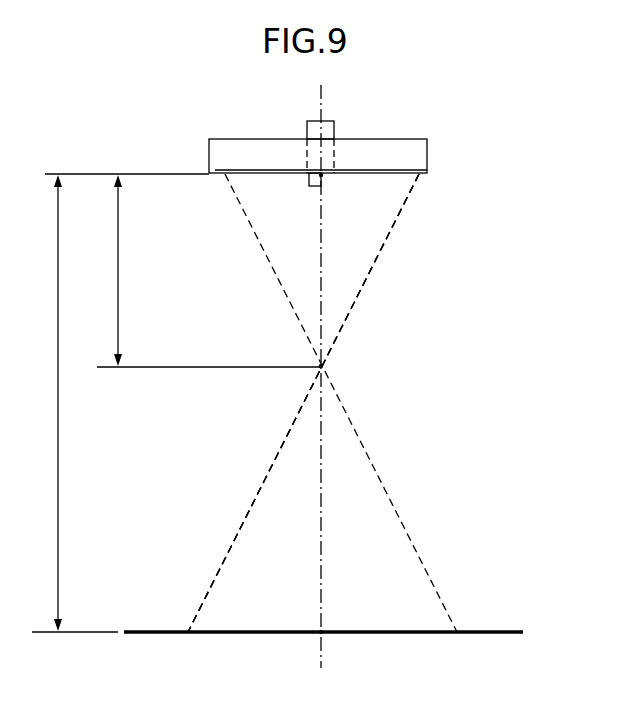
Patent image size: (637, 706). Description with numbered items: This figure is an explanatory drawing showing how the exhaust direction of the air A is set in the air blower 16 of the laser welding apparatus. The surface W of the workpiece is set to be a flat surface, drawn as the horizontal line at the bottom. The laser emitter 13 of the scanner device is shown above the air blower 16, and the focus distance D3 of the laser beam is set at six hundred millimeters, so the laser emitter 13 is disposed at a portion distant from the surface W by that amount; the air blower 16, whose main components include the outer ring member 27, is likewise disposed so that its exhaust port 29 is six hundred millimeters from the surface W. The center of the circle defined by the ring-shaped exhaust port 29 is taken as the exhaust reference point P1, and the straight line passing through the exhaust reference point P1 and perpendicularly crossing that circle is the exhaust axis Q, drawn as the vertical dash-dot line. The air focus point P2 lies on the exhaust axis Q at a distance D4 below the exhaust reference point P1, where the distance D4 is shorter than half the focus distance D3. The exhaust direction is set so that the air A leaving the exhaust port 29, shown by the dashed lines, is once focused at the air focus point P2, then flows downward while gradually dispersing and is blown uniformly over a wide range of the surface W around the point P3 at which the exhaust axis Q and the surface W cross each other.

The laser emitter 13 is at (307, 121).
The air blower 16 is at (209, 152).
The outer ring member 27 is at (428, 173).
The exhaust port 29 is at (418, 176).
The exhaust reference point P1 is at (322, 176).
The air focus point P2 is at (323, 366).
The point at which the exhaust axis and the surface cross P3 is at (321, 630).
The exhaust axis Q is at (321, 254).
The air A is at (378, 253).
The surface of the workpiece W is at (523, 632).
The focus distance D3 is at (43, 403).
The distance D4 is at (203, 271).